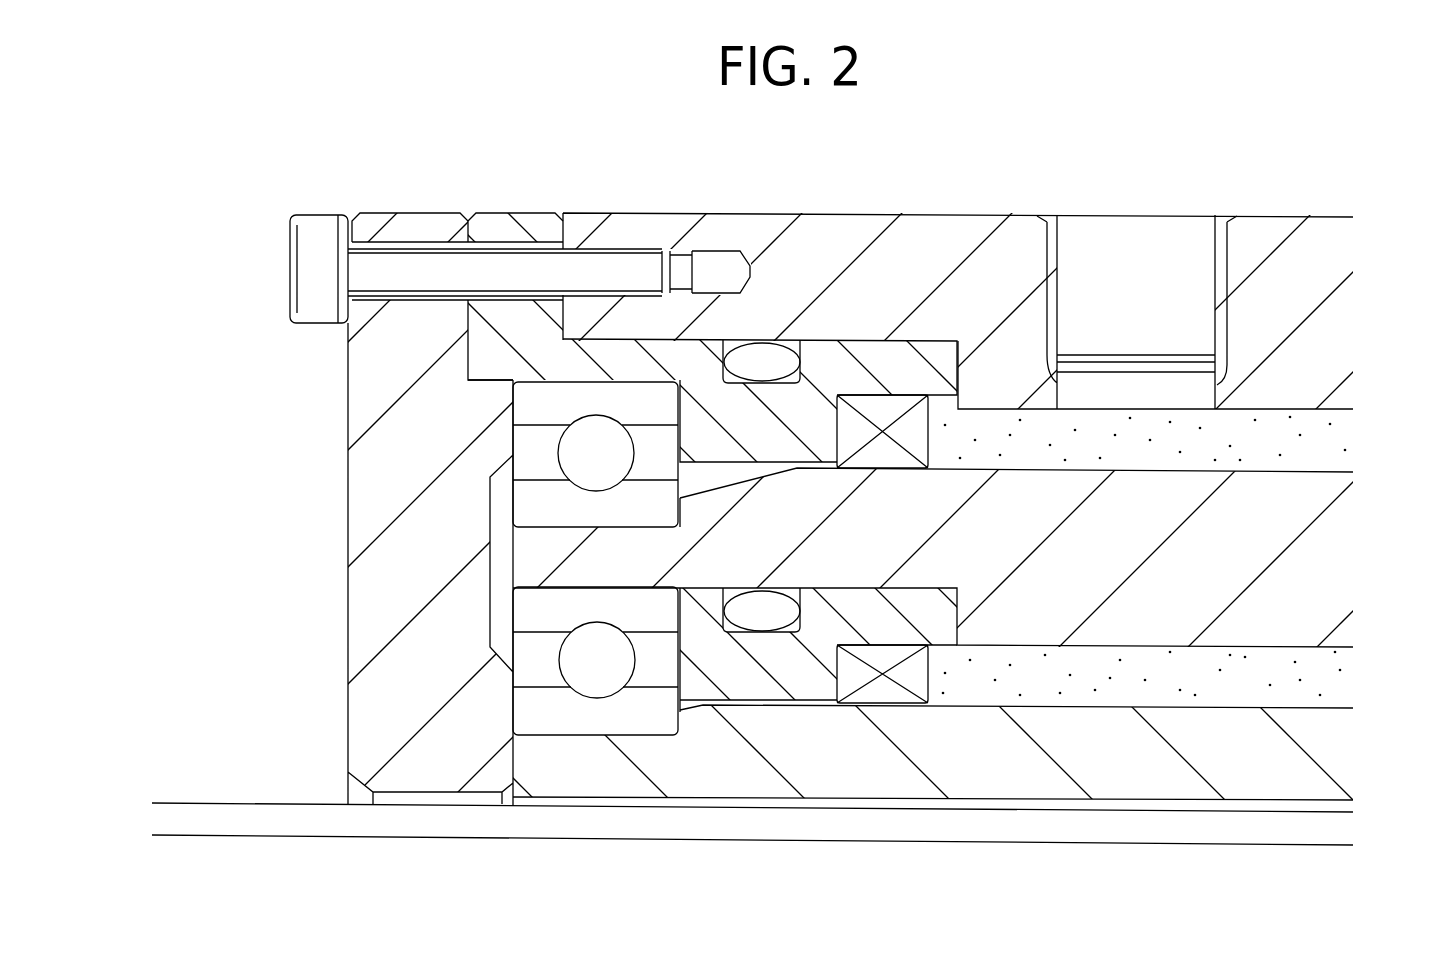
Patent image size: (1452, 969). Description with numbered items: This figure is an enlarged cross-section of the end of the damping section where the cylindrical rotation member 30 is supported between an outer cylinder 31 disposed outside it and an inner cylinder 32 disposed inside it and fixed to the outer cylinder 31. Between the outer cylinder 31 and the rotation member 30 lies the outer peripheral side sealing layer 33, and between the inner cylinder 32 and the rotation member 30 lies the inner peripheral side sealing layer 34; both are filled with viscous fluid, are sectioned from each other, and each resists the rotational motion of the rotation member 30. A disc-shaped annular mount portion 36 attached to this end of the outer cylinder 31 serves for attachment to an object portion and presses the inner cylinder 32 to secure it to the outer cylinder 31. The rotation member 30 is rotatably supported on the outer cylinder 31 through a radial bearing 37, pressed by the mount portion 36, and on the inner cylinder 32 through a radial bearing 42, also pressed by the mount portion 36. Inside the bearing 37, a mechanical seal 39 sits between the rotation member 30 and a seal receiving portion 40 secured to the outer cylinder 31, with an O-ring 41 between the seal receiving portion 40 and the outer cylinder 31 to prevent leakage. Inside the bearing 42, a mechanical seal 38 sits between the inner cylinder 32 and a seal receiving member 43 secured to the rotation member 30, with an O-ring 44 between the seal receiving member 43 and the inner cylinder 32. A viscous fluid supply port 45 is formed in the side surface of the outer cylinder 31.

The rotation member 30 is at (1328, 553).
The outer cylinder 31 is at (1328, 268).
The inner cylinder 32 is at (1325, 750).
The outer peripheral side sealing layer 33 is at (1320, 448).
The inner peripheral side sealing layer 34 is at (1320, 680).
The mount portion 36 is at (365, 498).
The radial bearing 37 is at (633, 397).
The mechanical seal 38 is at (893, 690).
The mechanical seal 39 is at (899, 400).
The seal receiving portion 40 is at (843, 370).
The O-ring 41 is at (766, 360).
The radial bearing 42 is at (578, 713).
The seal receiving member 43 is at (767, 687).
The O-ring 44 is at (747, 618).
The viscous fluid supply port 45 is at (1215, 268).